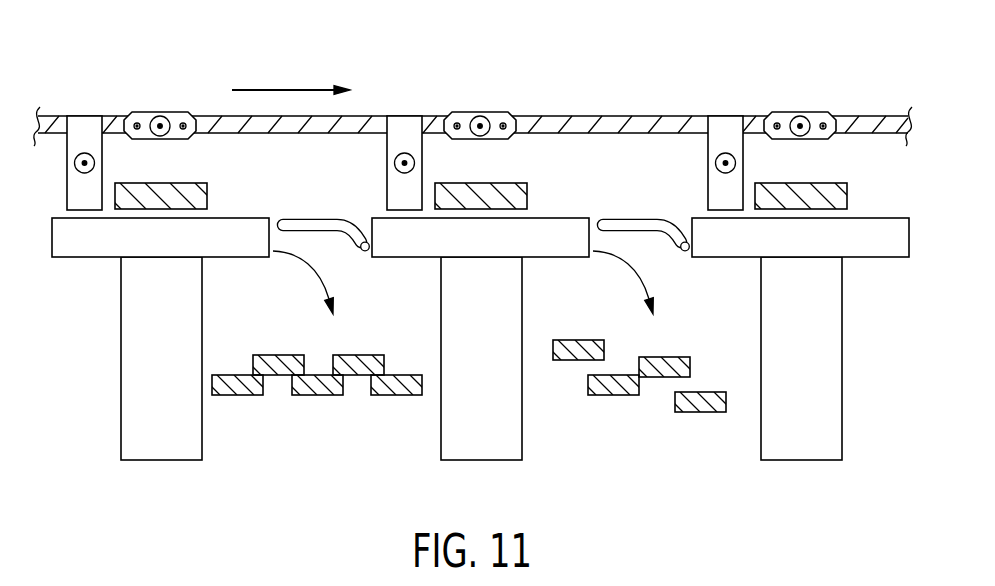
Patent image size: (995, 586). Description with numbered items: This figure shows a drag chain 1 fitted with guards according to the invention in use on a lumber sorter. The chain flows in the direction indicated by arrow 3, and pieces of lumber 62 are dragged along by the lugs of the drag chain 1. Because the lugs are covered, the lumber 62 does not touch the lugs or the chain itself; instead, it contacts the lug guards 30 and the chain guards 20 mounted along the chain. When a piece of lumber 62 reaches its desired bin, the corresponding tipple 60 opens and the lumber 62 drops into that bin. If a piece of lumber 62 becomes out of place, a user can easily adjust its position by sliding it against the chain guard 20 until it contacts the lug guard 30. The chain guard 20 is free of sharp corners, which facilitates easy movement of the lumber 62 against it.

The drag chain 1 is at (606, 116).
The arrow 3 is at (287, 88).
The chain guard 20 is at (146, 112).
The lug guard 30 is at (67, 181).
The tipple 60 is at (331, 233).
The lumber 62 is at (207, 194).